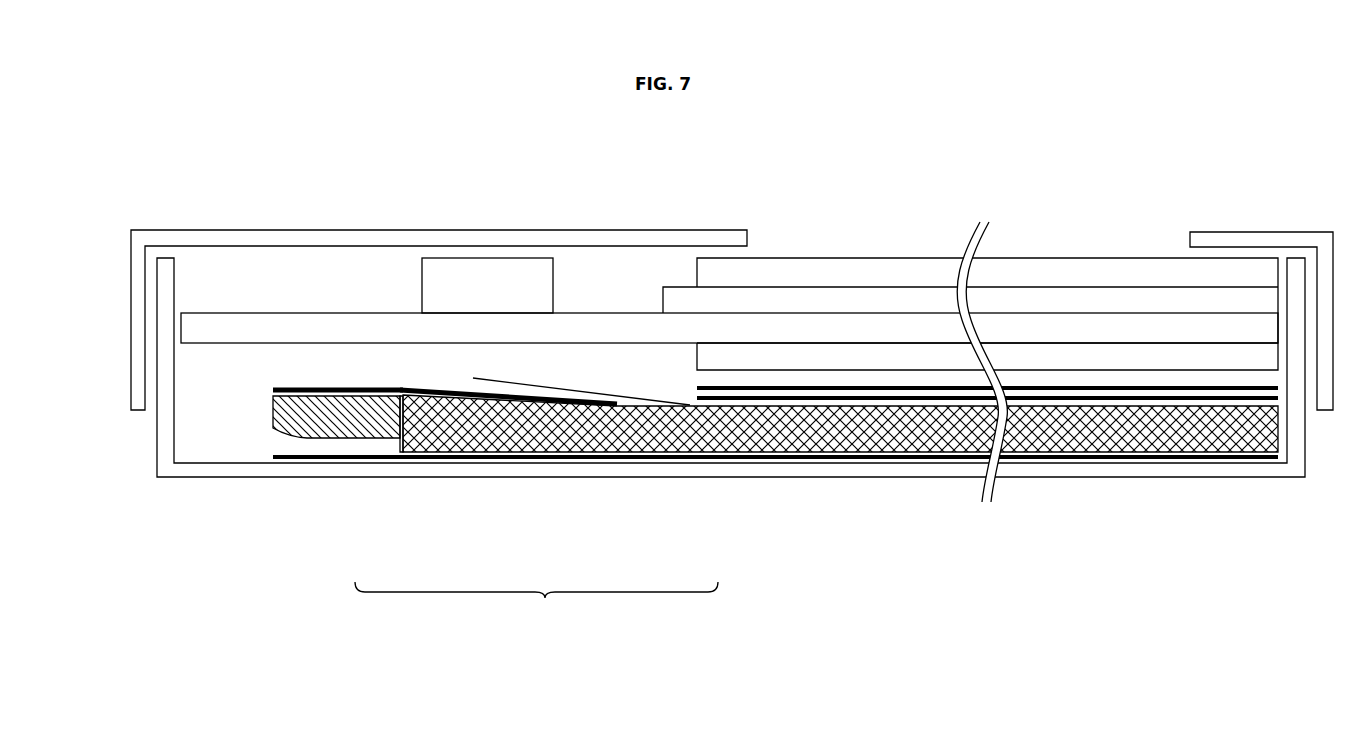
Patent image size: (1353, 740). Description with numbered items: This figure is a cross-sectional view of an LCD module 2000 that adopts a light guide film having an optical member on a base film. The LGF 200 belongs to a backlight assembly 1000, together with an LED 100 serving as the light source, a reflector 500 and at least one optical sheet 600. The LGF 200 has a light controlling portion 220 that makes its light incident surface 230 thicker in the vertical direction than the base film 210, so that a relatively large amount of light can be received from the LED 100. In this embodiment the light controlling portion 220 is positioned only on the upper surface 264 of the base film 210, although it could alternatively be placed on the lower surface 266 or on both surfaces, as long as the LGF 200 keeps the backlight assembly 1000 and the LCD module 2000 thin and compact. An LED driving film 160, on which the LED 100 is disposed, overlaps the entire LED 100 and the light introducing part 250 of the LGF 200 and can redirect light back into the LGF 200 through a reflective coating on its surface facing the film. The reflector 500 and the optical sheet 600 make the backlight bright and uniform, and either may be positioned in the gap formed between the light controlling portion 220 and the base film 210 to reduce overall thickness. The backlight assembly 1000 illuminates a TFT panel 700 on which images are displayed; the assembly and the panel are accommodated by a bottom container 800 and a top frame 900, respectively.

The LCD module 2000 is at (513, 130).
The top frame 900 is at (1223, 237).
The bottom container 800 is at (1218, 473).
The TFT panel 700 is at (1037, 257).
The optical sheet 600 is at (725, 395).
The reflector 500 is at (588, 458).
The light introducing part 250 is at (538, 418).
The light controlling portion 220 is at (388, 388).
The light incident surface 230 is at (400, 412).
The base film 210 is at (943, 437).
The LGF 200 is at (468, 425).
The LED driving film 160 is at (403, 395).
The LED 100 is at (345, 440).
The upper surface 264 is at (1168, 417).
The lower surface 266 is at (1115, 457).
The backlight assembly 1000 is at (536, 603).